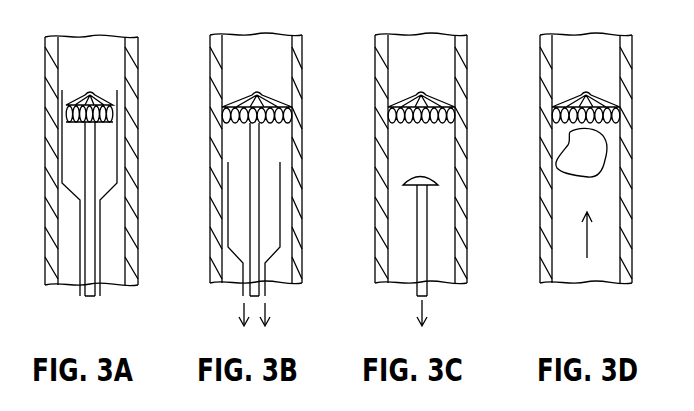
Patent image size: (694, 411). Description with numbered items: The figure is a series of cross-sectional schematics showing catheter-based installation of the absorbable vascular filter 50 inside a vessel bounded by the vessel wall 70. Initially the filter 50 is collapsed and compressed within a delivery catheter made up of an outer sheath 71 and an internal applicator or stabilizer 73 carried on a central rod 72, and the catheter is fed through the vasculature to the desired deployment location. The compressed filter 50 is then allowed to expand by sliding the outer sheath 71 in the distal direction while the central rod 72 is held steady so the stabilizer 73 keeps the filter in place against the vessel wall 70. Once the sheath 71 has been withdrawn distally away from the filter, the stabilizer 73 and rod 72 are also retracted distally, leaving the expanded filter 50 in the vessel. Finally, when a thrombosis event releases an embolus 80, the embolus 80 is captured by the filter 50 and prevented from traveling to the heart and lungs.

In FIG. 3A, the absorbable vascular filter 50 is at (103, 58).
In FIG. 3B, the absorbable vascular filter 50 is at (270, 58).
In FIG. 3C, the absorbable vascular filter 50 is at (434, 58).
In FIG. 3D, the absorbable vascular filter 50 is at (599, 58).
In FIG. 3A, the vessel wall 70 is at (160, 54).
In FIG. 3B, the vessel wall 70 is at (328, 54).
In FIG. 3C, the vessel wall 70 is at (493, 54).
In FIG. 3D, the vessel wall 70 is at (540, 62).
In FIG. 3A, the outer sheath 71 is at (80, 222).
In FIG. 3B, the outer sheath 71 is at (228, 220).
In FIG. 3A, the central rod 72 is at (85, 270).
In FIG. 3B, the central rod 72 is at (250, 268).
In FIG. 3C, the central rod 72 is at (417, 270).
In FIG. 3C, the stabilizer 73 is at (403, 185).
In FIG. 3D, the embolus 80 is at (557, 157).